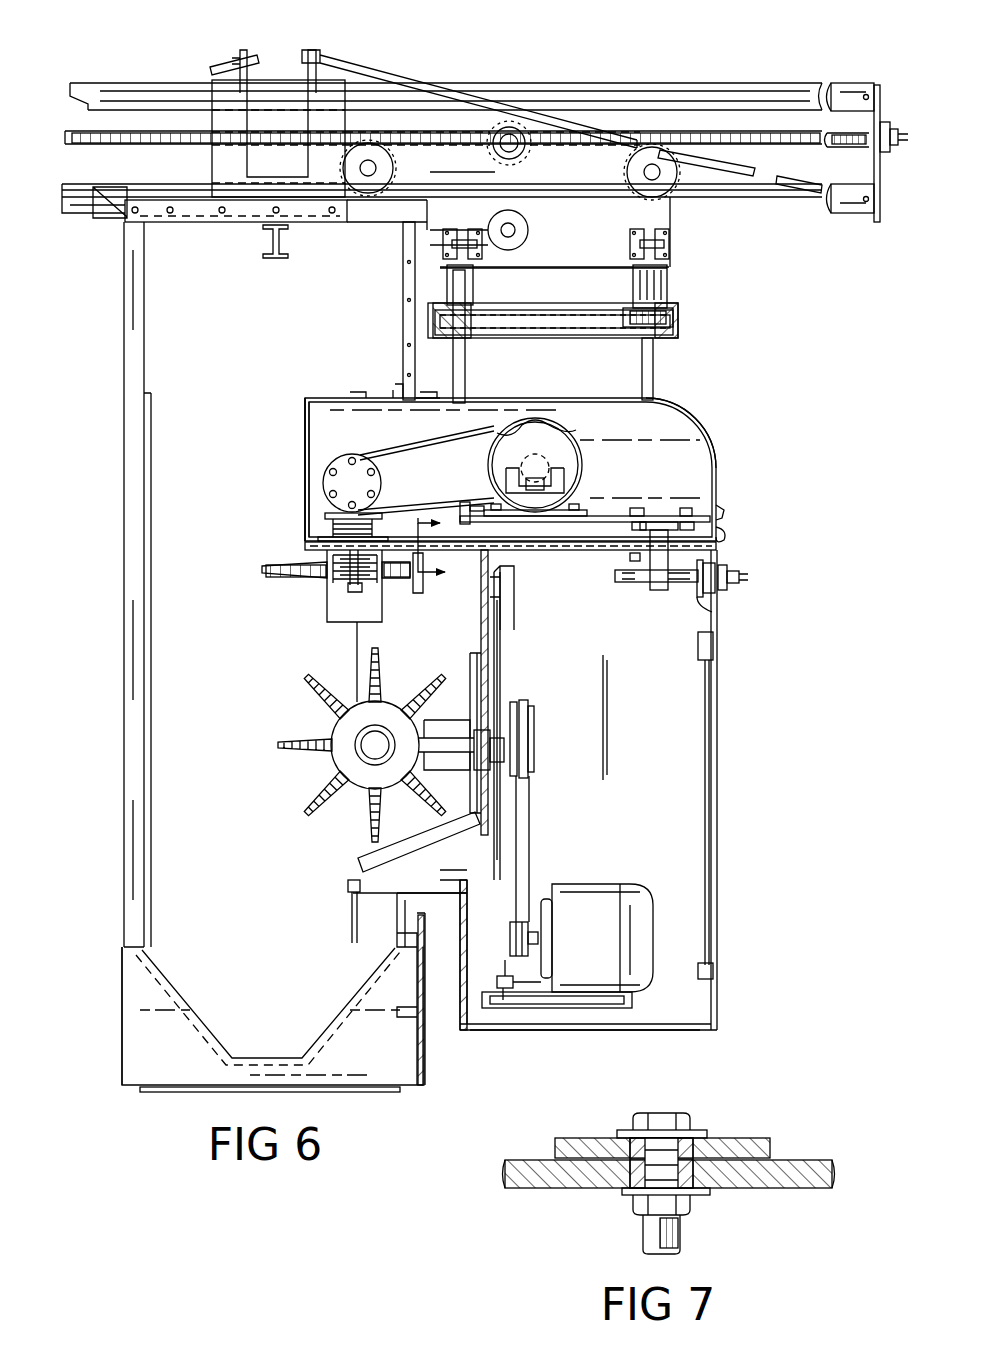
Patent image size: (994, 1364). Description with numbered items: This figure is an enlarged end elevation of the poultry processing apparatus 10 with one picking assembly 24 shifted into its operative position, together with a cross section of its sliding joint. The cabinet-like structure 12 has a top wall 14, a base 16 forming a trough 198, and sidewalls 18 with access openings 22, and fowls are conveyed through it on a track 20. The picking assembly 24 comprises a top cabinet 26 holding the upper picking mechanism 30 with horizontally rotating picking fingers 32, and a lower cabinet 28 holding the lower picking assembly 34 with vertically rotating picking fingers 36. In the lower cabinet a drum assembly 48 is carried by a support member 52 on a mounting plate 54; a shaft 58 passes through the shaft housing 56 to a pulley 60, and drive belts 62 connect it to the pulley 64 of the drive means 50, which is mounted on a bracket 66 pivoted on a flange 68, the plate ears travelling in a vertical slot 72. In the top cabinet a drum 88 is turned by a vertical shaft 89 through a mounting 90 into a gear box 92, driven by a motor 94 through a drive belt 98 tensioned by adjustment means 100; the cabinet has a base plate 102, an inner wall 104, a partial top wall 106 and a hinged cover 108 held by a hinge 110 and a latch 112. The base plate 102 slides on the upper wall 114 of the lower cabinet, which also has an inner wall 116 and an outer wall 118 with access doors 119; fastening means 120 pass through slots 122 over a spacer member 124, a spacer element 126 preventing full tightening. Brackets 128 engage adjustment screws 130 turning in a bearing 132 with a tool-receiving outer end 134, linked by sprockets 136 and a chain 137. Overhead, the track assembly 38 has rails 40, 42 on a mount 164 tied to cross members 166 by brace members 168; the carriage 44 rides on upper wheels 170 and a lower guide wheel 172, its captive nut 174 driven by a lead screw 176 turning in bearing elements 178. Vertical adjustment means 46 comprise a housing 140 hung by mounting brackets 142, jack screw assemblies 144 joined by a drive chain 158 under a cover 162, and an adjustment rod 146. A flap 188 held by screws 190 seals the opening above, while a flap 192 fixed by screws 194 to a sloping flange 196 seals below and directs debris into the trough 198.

In FIG. 6, the poultry processing apparatus 10 is at (84, 80).
In FIG. 6, the cabinet-like structure 12 is at (427, 1072).
In FIG. 6, the upper or top wall 14 is at (185, 214).
In FIG. 6, the base 16 is at (168, 1080).
In FIG. 6, the sidewalls 18 is at (145, 305).
In FIG. 6, the track 20 is at (278, 260).
In FIG. 6, the access openings 22 is at (125, 507).
In FIG. 6, the picking assembly 24 is at (660, 1032).
In FIG. 6, the top cabinet-like portion 26 is at (720, 468).
In FIG. 6, the lower cabinet-like portion 28 is at (719, 995).
In FIG. 6, the upper picking mechanism 30 is at (302, 551).
In FIG. 6, the picking fingers 32 is at (262, 570).
In FIG. 6, the lower picking assembly 34 is at (328, 726).
In FIG. 6, the picking fingers 36 is at (278, 743).
In FIG. 6, the overhead track assembly 38 is at (742, 78).
In FIG. 6, the rail member 40 is at (118, 90).
In FIG. 6, the lower rail 42 is at (70, 205).
In FIG. 6, the carriage members 44 is at (462, 159).
In FIG. 6, the vertical adjustment means 46 is at (697, 318).
In FIG. 6, the drum assemblies 48 is at (392, 710).
In FIG. 6, the drive means 50 is at (578, 884).
In FIG. 6, the support member 52 is at (505, 680).
In FIG. 6, the mounting plate 54 is at (501, 626).
In FIG. 6, the shaft housing 56 is at (522, 718).
In FIG. 6, the shaft 58 is at (530, 740).
In FIG. 6, the pulley 60 is at (520, 752).
In FIG. 6, the drive belts 62 is at (530, 815).
In FIG. 6, the pulley 64 is at (540, 940).
In FIG. 6, the bracket 66 is at (583, 1008).
In FIG. 6, the flange 68 is at (528, 1010).
In FIG. 6, the vertical slot 72 is at (514, 590).
In FIG. 6, the drum members 88 is at (342, 612).
In FIG. 6, the vertical shafts 89 is at (343, 582).
In FIG. 6, the mounting 90 is at (378, 540).
In FIG. 6, the gear box 92 is at (355, 462).
In FIG. 6, the drive means 94 is at (565, 443).
In FIG. 6, the drive belt 98 is at (415, 455).
In FIG. 6, the adjustment means 100 is at (583, 505).
In FIG. 6, the base plate 102 is at (510, 542).
In FIG. 6, the inner wall 104 is at (303, 460).
In FIG. 6, the partial top wall 106 is at (303, 394).
In FIG. 6, the hinged cover 108 is at (706, 434).
In FIG. 6, the hinge 110 is at (418, 396).
In FIG. 6, the latch 112 is at (720, 514).
In FIG. 6, the upper wall 114 is at (512, 551).
In FIG. 7, the upper wall 114 is at (525, 1188).
In FIG. 6, the inner wall 116 is at (480, 608).
In FIG. 6, the outer wall 118 is at (718, 714).
In FIG. 6, the access doors 119 is at (710, 788).
In FIG. 7, the fastening means 120 is at (680, 1108).
In FIG. 7, the slots 122 is at (628, 1130).
In FIG. 7, the spacer member 124 is at (560, 1158).
In FIG. 7, the spacer element 126 is at (640, 1180).
In FIG. 6, the brackets 128 is at (660, 590).
In FIG. 6, the adjustment screws 130 is at (640, 582).
In FIG. 6, the bearing or collar 132 is at (728, 568).
In FIG. 6, the outer end 134 is at (745, 578).
In FIG. 6, the sprocket 136 is at (718, 593).
In FIG. 6, the chain 137 is at (716, 608).
In FIG. 6, the housing 140 is at (580, 298).
In FIG. 6, the mounting brackets 142 is at (440, 240).
In FIG. 6, the jack screw assemblies 144 is at (475, 288).
In FIG. 6, the adjustment rod 146 is at (654, 378).
In FIG. 6, the drive chain 158 is at (557, 332).
In FIG. 6, the cover 162 is at (682, 336).
In FIG. 6, the mount 164 is at (283, 75).
In FIG. 6, the cross members 166 is at (877, 125).
In FIG. 6, the brace members 168 is at (553, 118).
In FIG. 6, the upper wheels 170 is at (372, 150).
In FIG. 6, the lower guide wheel 172 is at (530, 236).
In FIG. 6, the captive adjustment nut 174 is at (508, 128).
In FIG. 6, the lead screw 176 is at (113, 144).
In FIG. 6, the bearing elements 178 is at (886, 156).
In FIG. 6, the flap member 188 is at (356, 393).
In FIG. 6, the screws 190 is at (395, 382).
In FIG. 6, the flap 192 is at (352, 925).
In FIG. 6, the screws 194 is at (347, 887).
In FIG. 6, the flange 196 is at (420, 843).
In FIG. 6, the trough 198 is at (262, 1057).